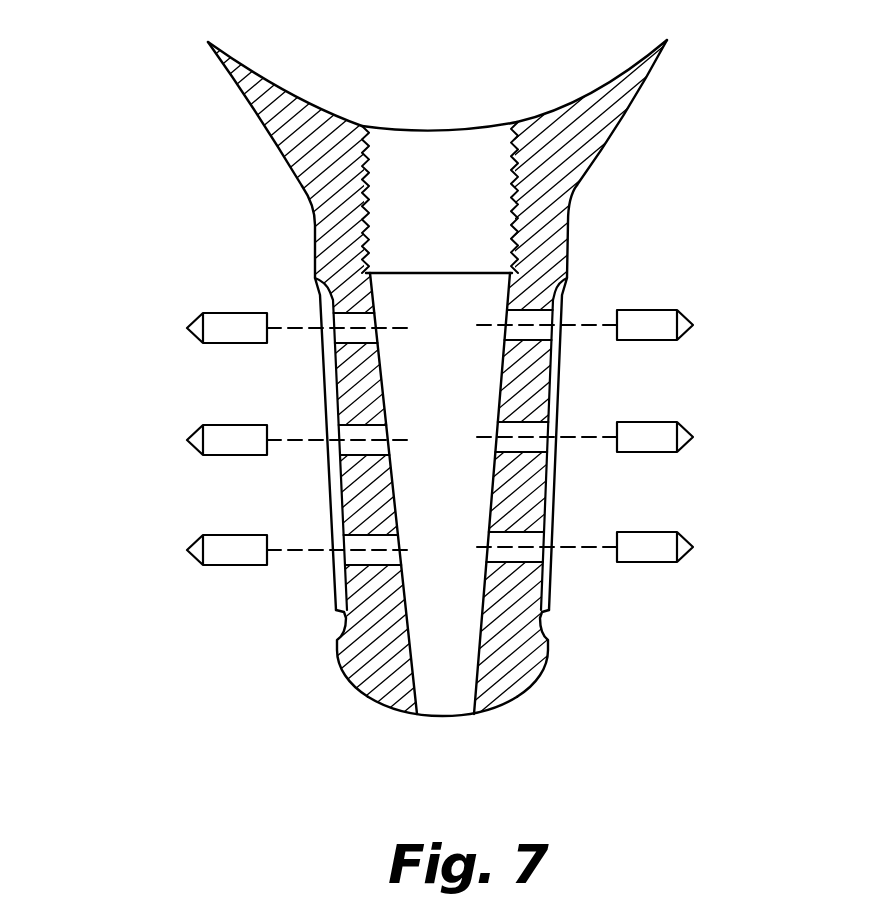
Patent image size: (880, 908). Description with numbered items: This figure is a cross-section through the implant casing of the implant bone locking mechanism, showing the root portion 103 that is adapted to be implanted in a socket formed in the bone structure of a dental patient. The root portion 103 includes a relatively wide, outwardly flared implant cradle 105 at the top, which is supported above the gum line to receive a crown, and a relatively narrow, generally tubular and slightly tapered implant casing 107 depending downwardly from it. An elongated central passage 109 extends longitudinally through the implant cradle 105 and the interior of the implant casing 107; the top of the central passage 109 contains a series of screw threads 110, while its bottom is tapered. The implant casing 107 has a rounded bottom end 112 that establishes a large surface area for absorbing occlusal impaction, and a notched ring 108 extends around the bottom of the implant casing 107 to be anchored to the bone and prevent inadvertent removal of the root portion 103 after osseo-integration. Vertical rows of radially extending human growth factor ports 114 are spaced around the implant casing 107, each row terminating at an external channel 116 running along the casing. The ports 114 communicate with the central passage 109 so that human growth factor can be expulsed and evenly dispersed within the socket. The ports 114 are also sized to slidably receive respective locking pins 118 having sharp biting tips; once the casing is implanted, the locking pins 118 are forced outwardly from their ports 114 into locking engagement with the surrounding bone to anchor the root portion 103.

The root portion 103 is at (655, 240).
The implant cradle 105 is at (620, 123).
The implant casing 107 is at (315, 232).
The notched ring 108 is at (546, 623).
The central passage 109 is at (476, 148).
The screw threads 110 is at (371, 153).
The rounded bottom end 112 is at (505, 703).
The human growth factor ports 114 is at (334, 323).
The external channel 116 is at (328, 489).
The locking pins 118 is at (217, 350).